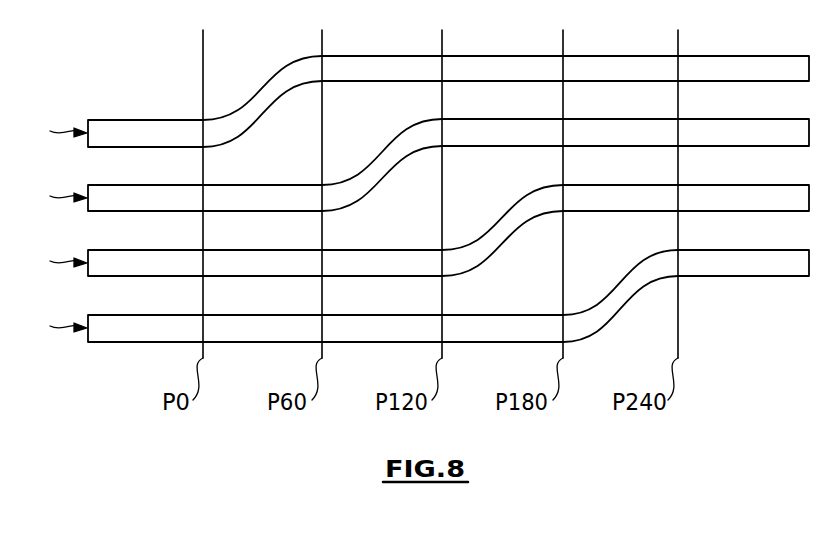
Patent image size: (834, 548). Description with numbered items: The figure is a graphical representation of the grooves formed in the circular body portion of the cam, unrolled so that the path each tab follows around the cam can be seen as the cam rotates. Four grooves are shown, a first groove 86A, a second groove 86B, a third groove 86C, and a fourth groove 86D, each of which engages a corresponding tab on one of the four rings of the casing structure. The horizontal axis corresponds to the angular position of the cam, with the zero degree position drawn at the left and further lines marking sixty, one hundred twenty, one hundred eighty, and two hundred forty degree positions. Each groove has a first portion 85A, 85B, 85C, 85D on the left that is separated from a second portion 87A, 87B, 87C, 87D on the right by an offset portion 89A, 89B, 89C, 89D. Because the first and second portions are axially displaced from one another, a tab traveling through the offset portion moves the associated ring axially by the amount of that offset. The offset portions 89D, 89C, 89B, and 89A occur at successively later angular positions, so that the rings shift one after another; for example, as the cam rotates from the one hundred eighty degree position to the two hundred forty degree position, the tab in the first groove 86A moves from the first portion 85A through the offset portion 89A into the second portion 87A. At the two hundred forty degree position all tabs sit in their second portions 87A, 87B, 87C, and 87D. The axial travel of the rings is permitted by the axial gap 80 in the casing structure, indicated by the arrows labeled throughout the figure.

The axial gap 80 is at (408, 204).
The first portion of first groove 85A is at (105, 332).
The first portion of second groove 85B is at (110, 265).
The first portion of third groove 85C is at (110, 200).
The first portion of fourth groove 85D is at (110, 135).
The first groove 86A is at (47, 327).
The second groove 86B is at (47, 262).
The third groove 86C is at (47, 197).
The fourth groove 86D is at (47, 132).
The second portion of first groove 87A is at (727, 250).
The second portion of second groove 87B is at (602, 184).
The second portion of third groove 87C is at (483, 119).
The second portion of fourth groove 87D is at (362, 55).
The offset portion of first groove 89A is at (632, 280).
The offset portion of second groove 89B is at (507, 216).
The offset portion of third groove 89C is at (390, 152).
The offset portion of fourth groove 89D is at (268, 87).